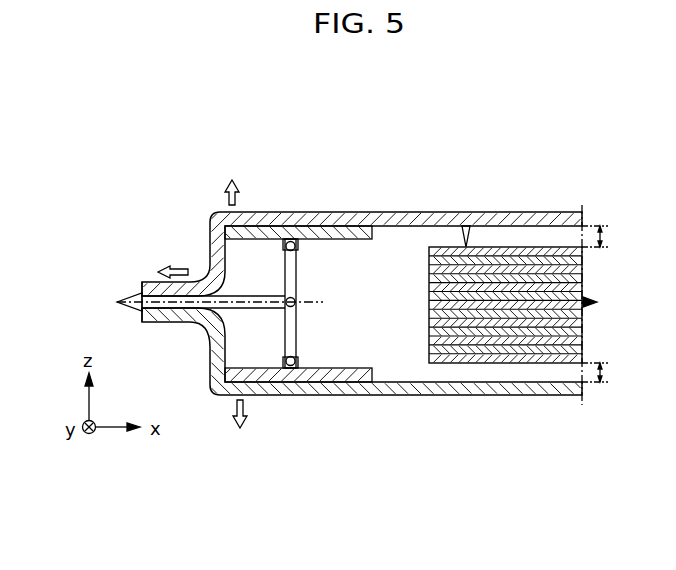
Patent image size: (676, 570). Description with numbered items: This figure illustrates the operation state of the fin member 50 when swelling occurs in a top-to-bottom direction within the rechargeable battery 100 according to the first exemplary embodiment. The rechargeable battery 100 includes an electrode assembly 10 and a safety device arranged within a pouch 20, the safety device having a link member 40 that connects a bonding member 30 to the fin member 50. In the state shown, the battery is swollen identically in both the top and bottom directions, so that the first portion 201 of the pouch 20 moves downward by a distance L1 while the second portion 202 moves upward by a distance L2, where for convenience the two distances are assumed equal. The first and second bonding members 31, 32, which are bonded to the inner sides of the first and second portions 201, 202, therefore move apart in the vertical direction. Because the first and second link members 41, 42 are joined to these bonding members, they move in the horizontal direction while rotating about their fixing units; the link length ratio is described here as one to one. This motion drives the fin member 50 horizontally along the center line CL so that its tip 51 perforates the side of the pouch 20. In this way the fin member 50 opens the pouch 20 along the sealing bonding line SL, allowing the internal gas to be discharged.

The rechargeable battery 100 is at (362, 121).
The electrode assembly 10 is at (466, 212).
The pouch 20 is at (541, 473).
The first portion of pouch 201 is at (515, 395).
The second portion of pouch 202 is at (541, 212).
The bonding member 30 is at (362, 488).
The first bonding member 31 is at (357, 382).
The second bonding member 32 is at (354, 226).
The link member 40 is at (272, 488).
The first link member 41 is at (297, 340).
The second link member 42 is at (297, 263).
The fin member 50 is at (251, 294).
The tip 51 is at (137, 297).
The sealing bonding line SL is at (153, 281).
The center line CL is at (197, 309).
The distance L1 is at (607, 375).
The distance L2 is at (607, 238).